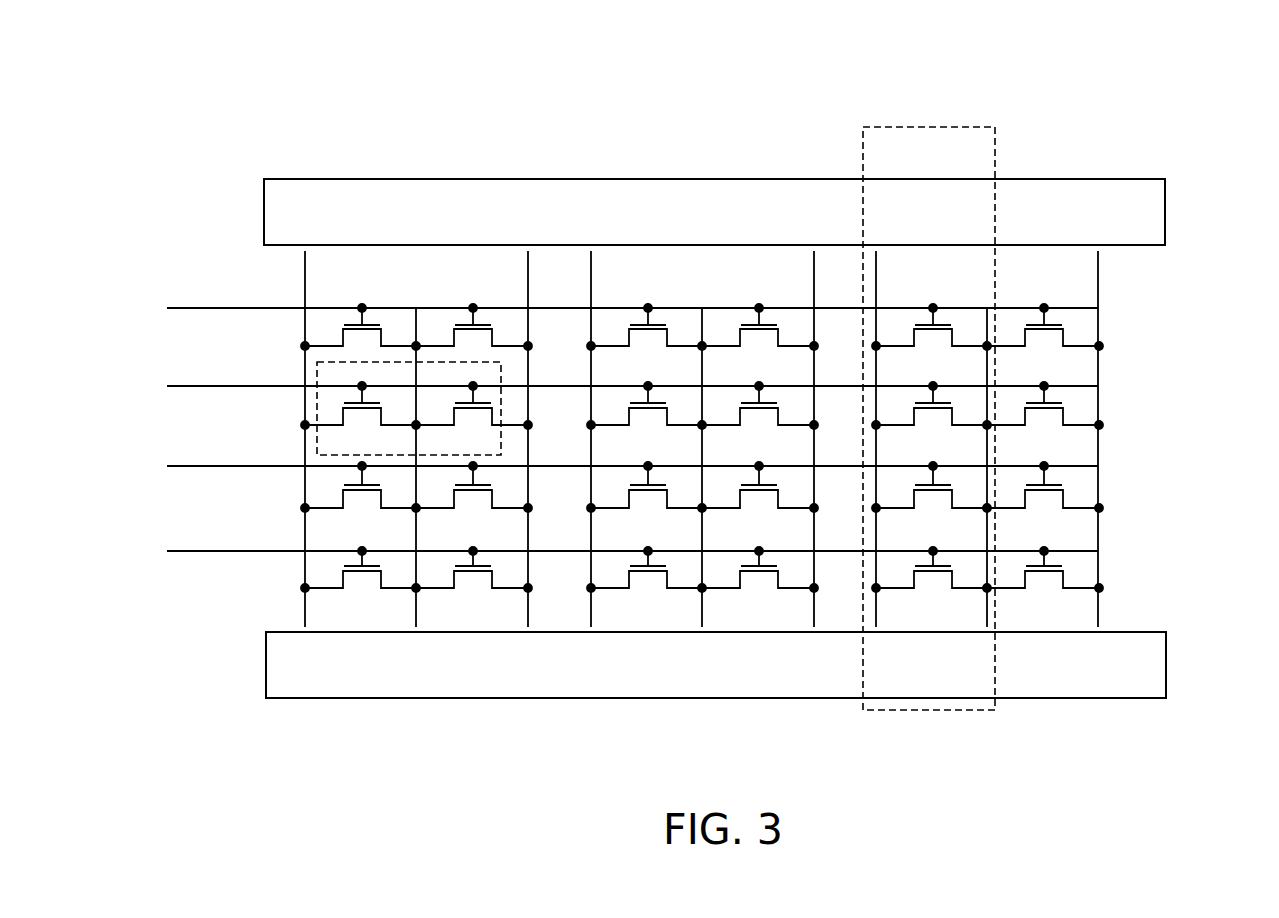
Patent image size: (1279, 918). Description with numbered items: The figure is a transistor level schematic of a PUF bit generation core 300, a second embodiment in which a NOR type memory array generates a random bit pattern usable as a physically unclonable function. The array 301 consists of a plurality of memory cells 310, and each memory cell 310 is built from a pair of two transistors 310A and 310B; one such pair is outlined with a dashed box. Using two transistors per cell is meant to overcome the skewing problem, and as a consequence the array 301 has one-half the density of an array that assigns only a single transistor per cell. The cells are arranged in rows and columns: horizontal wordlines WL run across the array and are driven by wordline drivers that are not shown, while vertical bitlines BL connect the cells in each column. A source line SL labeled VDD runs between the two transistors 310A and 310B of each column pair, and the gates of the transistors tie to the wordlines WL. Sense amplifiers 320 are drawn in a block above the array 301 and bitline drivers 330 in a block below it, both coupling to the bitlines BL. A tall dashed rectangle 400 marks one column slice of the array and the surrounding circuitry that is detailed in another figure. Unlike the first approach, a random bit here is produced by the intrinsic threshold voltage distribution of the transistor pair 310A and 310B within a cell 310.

The PUF bit generation core 300 is at (1158, 88).
The array 301 is at (1119, 316).
The memory cell 310 is at (317, 441).
The first transistor of the pair 310A is at (358, 417).
The second transistor of the pair 310B is at (472, 417).
The sense amplifiers 320 is at (452, 187).
The bitline drivers 330 is at (436, 677).
The column portion shown in Fig. 4 400 is at (935, 126).
The bitline BL is at (302, 288).
The source line (VDD) SL is at (415, 327).
The wordline WL is at (217, 549).